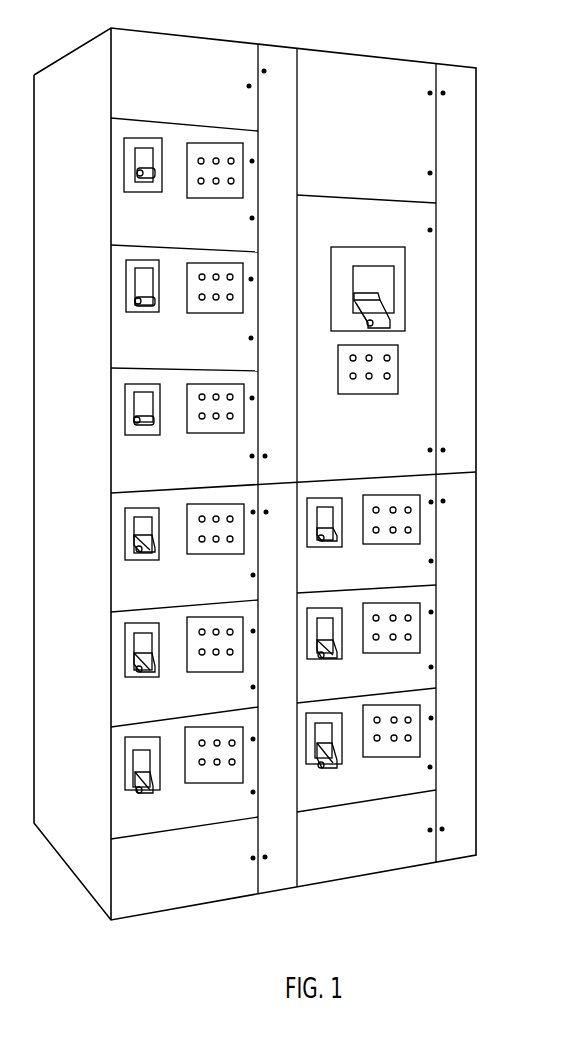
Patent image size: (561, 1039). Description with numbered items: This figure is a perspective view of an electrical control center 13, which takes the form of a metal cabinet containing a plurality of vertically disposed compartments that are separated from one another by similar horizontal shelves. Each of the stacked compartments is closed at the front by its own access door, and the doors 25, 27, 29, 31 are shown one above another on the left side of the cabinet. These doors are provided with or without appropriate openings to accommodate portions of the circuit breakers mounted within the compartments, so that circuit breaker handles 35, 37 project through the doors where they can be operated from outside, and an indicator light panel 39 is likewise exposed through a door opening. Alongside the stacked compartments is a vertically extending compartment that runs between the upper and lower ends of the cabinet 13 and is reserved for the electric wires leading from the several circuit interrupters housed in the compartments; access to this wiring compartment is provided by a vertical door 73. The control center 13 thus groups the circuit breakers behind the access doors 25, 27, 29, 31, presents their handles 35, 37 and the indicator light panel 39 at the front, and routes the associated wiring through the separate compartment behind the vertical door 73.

The electric control center 13 is at (497, 885).
The access door 25 is at (187, 236).
The access door 27 is at (182, 350).
The access door 29 is at (162, 478).
The access door 31 is at (167, 595).
The handle 35 is at (381, 289).
The handle 37 is at (140, 418).
The indicator light panel 39 is at (203, 427).
The vertical door 73 is at (288, 342).